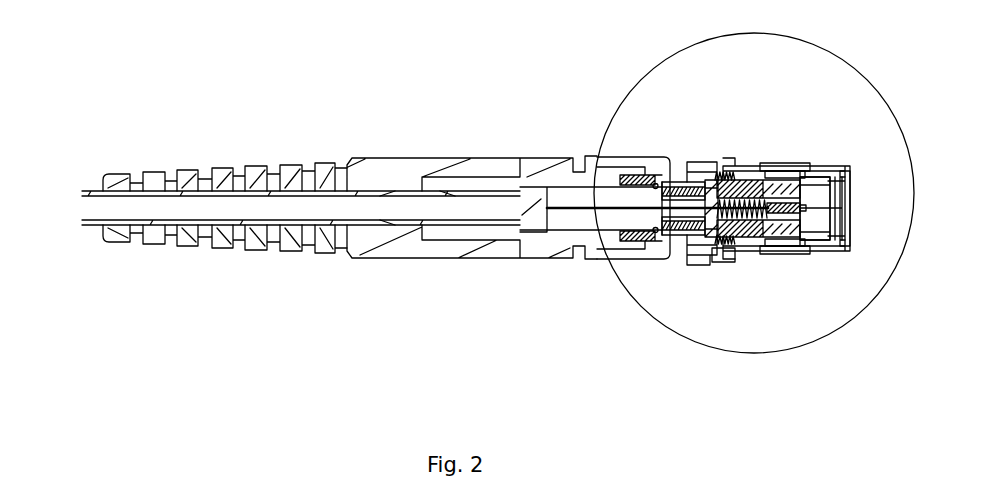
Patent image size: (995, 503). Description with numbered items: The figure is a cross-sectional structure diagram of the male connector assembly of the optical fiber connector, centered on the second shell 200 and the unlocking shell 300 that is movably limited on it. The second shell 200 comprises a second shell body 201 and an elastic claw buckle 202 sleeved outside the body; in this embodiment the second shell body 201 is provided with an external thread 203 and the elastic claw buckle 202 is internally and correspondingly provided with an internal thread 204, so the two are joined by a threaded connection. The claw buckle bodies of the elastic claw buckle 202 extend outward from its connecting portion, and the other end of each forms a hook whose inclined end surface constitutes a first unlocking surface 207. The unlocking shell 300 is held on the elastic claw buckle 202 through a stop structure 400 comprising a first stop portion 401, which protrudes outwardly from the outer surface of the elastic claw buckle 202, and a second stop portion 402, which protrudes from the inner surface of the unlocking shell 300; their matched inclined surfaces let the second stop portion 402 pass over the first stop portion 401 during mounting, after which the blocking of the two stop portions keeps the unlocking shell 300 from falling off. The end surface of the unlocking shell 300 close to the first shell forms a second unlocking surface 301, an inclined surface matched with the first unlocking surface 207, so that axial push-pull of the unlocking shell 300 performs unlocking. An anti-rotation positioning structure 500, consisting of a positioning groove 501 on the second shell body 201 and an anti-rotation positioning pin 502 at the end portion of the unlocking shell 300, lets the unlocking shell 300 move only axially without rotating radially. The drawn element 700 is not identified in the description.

The second shell 200 is at (783, 188).
The second shell body 201 is at (690, 162).
The elastic claw buckle 202 is at (748, 180).
The external thread 203 is at (720, 262).
The internal thread 204 is at (740, 250).
The first unlocking surface 207 is at (837, 178).
The unlocking shell 300 is at (798, 252).
The second unlocking surface 301 is at (848, 177).
The stop structure 400 is at (788, 169).
The first stop portion 401 is at (782, 172).
The second stop portion 402 is at (770, 165).
The anti-rotation positioning structure 500 is at (680, 246).
The positioning groove 501 is at (683, 256).
The anti-rotation positioning pin 502 is at (705, 250).
The contact pin 700 is at (790, 192).